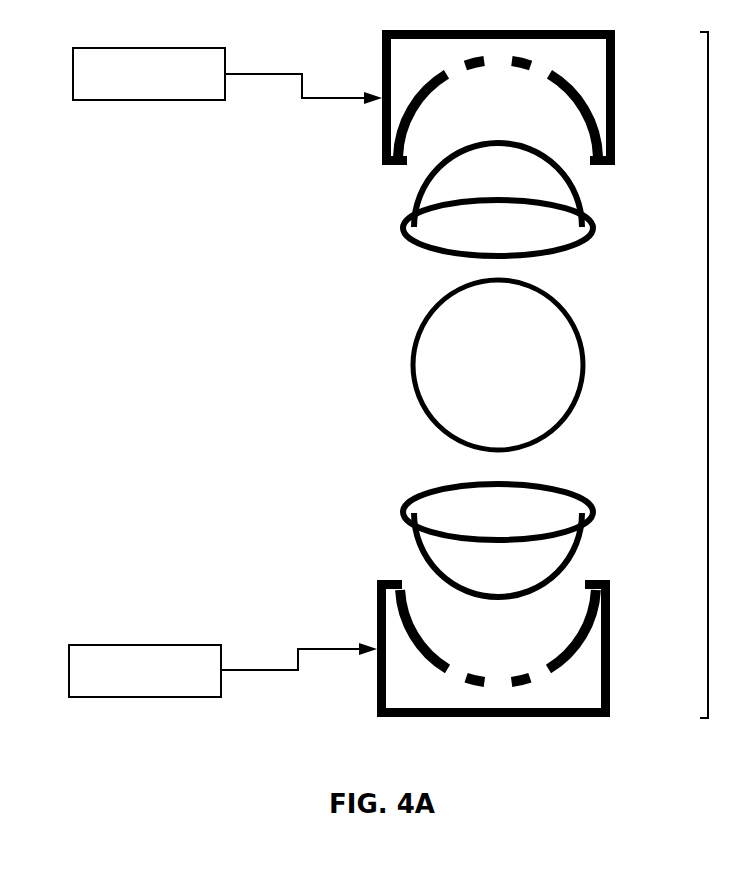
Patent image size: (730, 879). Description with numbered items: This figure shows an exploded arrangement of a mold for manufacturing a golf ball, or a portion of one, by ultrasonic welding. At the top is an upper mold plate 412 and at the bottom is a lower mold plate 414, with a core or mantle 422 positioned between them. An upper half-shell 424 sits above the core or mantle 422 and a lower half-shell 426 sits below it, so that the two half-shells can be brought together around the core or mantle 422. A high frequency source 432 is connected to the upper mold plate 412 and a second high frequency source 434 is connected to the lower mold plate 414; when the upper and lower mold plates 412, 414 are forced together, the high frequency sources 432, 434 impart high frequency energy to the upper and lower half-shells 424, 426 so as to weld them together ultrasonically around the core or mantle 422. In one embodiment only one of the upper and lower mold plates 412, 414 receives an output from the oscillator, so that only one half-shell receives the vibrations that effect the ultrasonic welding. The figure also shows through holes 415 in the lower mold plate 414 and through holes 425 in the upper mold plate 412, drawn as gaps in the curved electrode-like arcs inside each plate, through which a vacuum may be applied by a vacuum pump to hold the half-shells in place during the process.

The upper mold plate 412 is at (548, 375).
The lower mold plate 414 is at (532, 649).
The through holes 415 is at (498, 636).
The core or mantle 422 is at (433, 365).
The upper half-shell 424 is at (438, 199).
The through holes 425 is at (498, 109).
The lower half-shell 426 is at (438, 540).
The high frequency source 432 is at (227, 98).
The high frequency source 434 is at (223, 694).